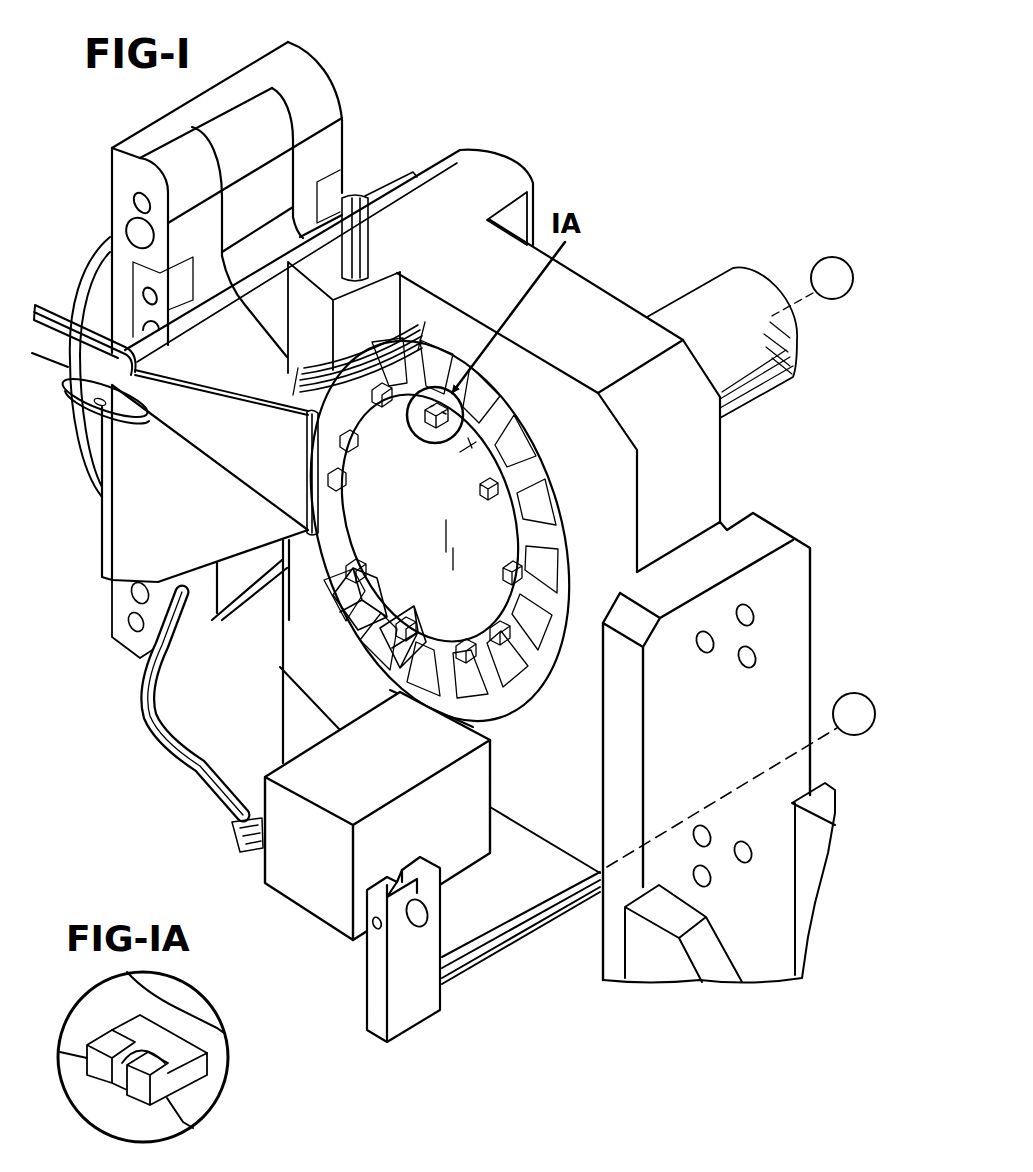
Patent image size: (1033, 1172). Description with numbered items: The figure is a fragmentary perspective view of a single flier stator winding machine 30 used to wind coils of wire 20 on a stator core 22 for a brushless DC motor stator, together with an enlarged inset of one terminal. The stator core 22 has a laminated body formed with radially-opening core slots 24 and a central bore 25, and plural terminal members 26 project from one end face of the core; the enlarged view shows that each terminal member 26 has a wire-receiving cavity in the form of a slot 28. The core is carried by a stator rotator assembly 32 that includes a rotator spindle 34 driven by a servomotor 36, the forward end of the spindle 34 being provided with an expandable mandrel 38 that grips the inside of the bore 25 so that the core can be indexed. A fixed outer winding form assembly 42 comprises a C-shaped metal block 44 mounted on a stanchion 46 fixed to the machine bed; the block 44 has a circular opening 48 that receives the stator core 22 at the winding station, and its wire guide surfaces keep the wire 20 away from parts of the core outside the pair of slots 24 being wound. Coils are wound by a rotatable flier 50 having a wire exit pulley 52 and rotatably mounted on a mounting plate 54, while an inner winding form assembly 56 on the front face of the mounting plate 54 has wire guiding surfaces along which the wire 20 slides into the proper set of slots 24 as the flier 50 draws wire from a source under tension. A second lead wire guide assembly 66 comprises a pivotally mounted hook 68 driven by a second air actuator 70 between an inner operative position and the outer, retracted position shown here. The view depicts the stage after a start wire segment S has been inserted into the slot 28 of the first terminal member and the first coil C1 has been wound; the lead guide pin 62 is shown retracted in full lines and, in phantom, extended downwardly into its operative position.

In FIG. 1, the wire 20 is at (210, 455).
In FIG. 1, the stator core 22 is at (527, 543).
In FIG. 1, the core slots 24 is at (372, 634).
In FIG. 1, the central bore 25 is at (370, 553).
In FIG. 1, the terminal members 26 is at (480, 489).
In FIG. 1A, the terminal members 26 is at (165, 1062).
In FIG. 1A, the slot 28 is at (132, 1048).
In FIG. 1, the stator winding machine 30 is at (410, 130).
In FIG. 1, the stator rotator assembly 32 is at (758, 437).
In FIG. 1, the rotator spindle 34 is at (722, 287).
In FIG. 1, the servomotor 36 is at (826, 260).
In FIG. 1, the expandable mandrel 38 is at (452, 455).
In FIG. 1, the outer winding form assembly 42 is at (515, 151).
In FIG. 1, the C-shaped metal block 44 is at (615, 307).
In FIG. 1, the stanchion 46 is at (797, 565).
In FIG. 1, the circular opening 48 is at (483, 527).
In FIG. 1, the flier 50 is at (57, 300).
In FIG. 1, the wire exit pulley 52 is at (130, 420).
In FIG. 1, the mounting plate 54 is at (97, 292).
In FIG. 1, the inner winding form assembly 56 is at (133, 567).
In FIG. 1, the lead guide pin 62 is at (350, 197).
In FIG. 1, the second lead wire guide assembly 66 is at (308, 931).
In FIG. 1, the hook 68 is at (222, 785).
In FIG. 1, the second air actuator 70 is at (852, 692).
In FIG. 1, the first coil C1 is at (412, 338).
In FIG. 1, the start wire segment S is at (360, 447).